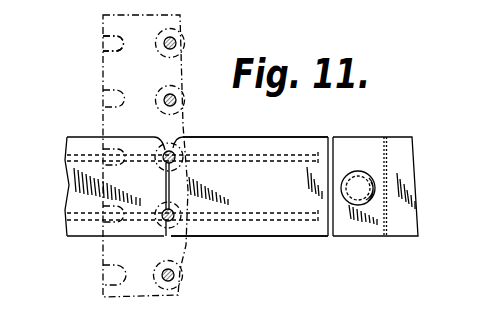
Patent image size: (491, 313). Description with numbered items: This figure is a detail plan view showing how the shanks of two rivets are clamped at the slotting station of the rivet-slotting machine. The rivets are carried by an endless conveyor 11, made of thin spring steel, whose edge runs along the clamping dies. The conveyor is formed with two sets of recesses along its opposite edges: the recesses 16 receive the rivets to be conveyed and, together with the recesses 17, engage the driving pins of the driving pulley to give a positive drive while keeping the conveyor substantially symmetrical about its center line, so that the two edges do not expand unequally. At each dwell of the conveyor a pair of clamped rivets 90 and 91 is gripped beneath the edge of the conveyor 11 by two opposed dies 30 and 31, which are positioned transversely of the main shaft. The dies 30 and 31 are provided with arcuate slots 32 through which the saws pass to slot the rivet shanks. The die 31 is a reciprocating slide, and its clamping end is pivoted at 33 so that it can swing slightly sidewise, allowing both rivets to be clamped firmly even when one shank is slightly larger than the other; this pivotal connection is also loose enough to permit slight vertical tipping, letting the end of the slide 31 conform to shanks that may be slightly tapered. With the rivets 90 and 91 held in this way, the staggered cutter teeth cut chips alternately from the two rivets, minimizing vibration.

The endless conveyor 11 is at (114, 76).
The conveyor recesses 16 is at (181, 43).
The conveyor recesses 17 is at (109, 41).
The die 30 is at (66, 198).
The die 31 is at (249, 186).
The arcuate slots 32 is at (248, 160).
The pivot 33 is at (372, 162).
The clamped rivet 90 is at (173, 222).
The clamped rivet 91 is at (173, 150).